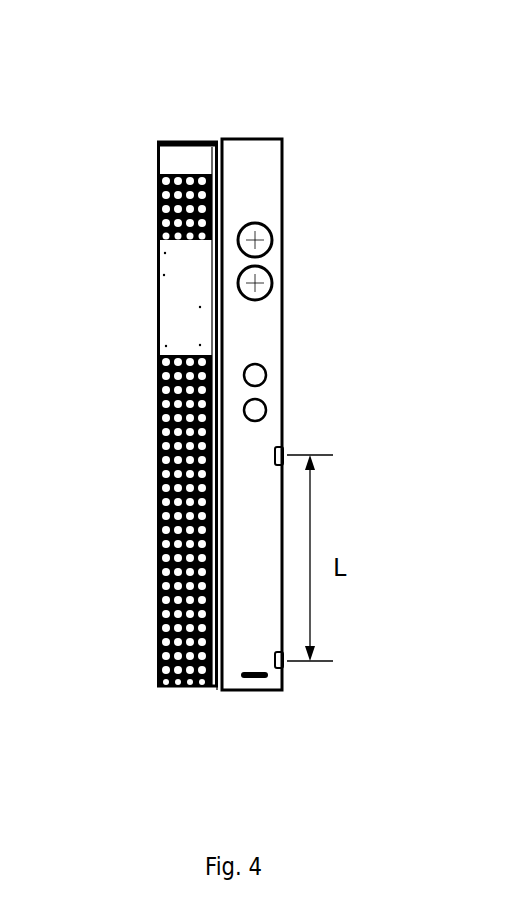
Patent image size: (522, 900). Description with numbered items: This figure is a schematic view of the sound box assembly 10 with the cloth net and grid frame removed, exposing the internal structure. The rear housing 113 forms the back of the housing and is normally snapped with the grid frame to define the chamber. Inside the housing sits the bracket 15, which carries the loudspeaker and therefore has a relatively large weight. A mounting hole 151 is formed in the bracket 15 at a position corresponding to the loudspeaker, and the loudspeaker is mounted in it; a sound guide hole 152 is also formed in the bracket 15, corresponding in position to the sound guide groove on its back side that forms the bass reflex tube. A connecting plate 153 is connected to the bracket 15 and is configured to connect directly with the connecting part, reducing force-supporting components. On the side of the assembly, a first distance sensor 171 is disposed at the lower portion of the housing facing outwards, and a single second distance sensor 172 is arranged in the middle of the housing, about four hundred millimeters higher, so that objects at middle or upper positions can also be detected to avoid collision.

The sound box assembly 10 is at (86, 37).
The bracket 15 is at (265, 170).
The mounting hole 151 is at (274, 283).
The sound guide hole 152 is at (268, 414).
The connecting plate 153 is at (172, 160).
The rear housing 113 is at (158, 462).
The first distance sensor 171 is at (284, 665).
The second distance sensor 172 is at (284, 452).